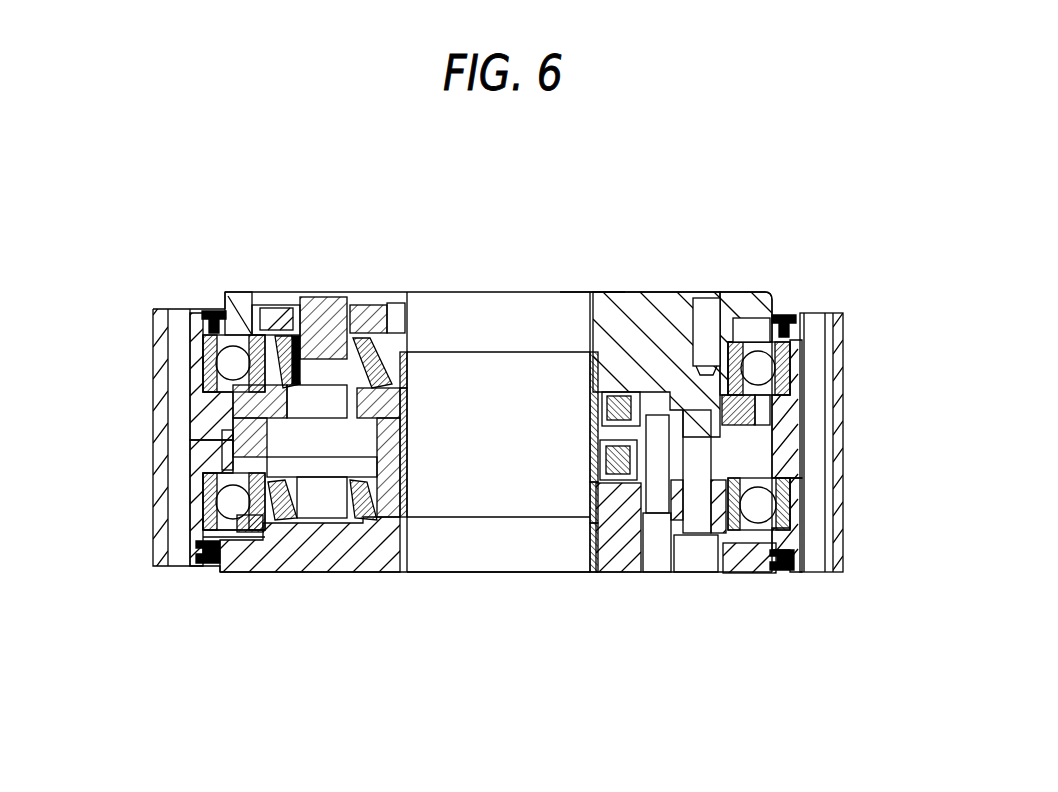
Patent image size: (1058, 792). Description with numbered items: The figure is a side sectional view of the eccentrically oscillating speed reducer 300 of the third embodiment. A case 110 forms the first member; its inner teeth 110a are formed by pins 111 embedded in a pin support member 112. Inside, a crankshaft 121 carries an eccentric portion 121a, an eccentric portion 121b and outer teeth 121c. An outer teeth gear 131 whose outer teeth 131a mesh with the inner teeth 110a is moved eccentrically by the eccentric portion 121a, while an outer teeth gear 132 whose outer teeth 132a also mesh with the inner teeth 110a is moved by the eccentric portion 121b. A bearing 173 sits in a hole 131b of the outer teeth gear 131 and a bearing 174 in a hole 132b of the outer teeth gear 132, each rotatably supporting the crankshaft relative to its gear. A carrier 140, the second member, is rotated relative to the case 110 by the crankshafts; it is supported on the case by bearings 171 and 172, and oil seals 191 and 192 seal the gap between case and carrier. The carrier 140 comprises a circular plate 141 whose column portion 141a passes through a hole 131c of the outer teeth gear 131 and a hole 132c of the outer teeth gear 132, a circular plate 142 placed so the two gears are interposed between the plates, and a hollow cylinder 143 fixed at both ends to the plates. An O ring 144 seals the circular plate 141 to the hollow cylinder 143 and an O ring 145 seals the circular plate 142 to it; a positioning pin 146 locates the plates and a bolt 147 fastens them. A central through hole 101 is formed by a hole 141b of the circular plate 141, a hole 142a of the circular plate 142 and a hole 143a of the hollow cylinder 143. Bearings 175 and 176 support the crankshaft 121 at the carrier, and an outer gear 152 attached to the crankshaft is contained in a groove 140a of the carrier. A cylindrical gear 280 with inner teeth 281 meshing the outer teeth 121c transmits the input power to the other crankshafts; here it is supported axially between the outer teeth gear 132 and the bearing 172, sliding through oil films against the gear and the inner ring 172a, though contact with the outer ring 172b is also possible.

The eccentrically oscillating speed reducer 300 is at (132, 272).
The through hole 101 is at (403, 565).
The case 110 is at (843, 558).
The inner teeth 110a is at (843, 453).
The pin 111 is at (807, 423).
The pin support member 112 is at (160, 322).
The crankshaft 121 is at (325, 565).
The eccentric portion 121a is at (203, 378).
The eccentric portion 121b is at (283, 560).
The outer teeth 121c is at (405, 470).
The outer teeth gear 131 is at (645, 293).
The outer teeth 131a is at (790, 372).
The hole 131b is at (408, 410).
The hole 131c is at (668, 293).
The outer teeth gear 132 is at (597, 565).
The outer teeth 132a is at (782, 470).
The hole 132b is at (407, 440).
The hole 132c is at (627, 562).
The carrier 140 is at (748, 293).
The groove 140a is at (387, 295).
The circular plate 141 is at (610, 293).
The column portion 141a is at (794, 562).
The hole 141b is at (570, 293).
The circular plate 142 is at (738, 572).
The hole 142a is at (588, 555).
The hollow cylinder 143 is at (592, 413).
The hole 143a is at (592, 463).
The O ring 144 is at (408, 372).
The O ring 145 is at (592, 500).
The positioning pin 146 is at (657, 562).
The bolt 147 is at (696, 552).
The outer gear 152 is at (365, 293).
The bearing 171 is at (838, 324).
The bearing 172 is at (203, 497).
The inner ring 172a is at (198, 567).
The outer ring 172b is at (222, 527).
The bearing 173 is at (203, 403).
The bearing 174 is at (205, 448).
The bearing 175 is at (280, 327).
The bearing 176 is at (358, 565).
The oil seal 191 is at (207, 318).
The oil seal 192 is at (203, 568).
The cylindrical gear 280 is at (782, 462).
The inner teeth 281 is at (780, 493).